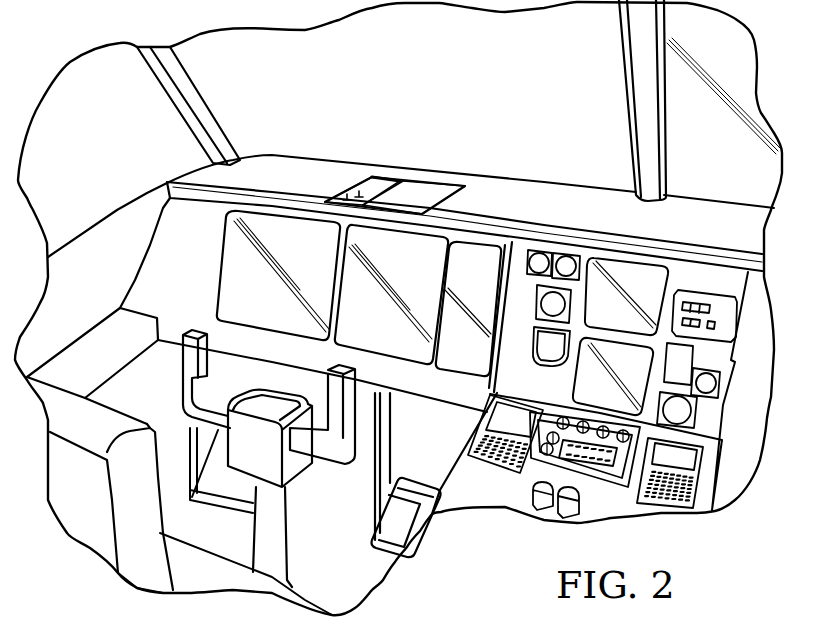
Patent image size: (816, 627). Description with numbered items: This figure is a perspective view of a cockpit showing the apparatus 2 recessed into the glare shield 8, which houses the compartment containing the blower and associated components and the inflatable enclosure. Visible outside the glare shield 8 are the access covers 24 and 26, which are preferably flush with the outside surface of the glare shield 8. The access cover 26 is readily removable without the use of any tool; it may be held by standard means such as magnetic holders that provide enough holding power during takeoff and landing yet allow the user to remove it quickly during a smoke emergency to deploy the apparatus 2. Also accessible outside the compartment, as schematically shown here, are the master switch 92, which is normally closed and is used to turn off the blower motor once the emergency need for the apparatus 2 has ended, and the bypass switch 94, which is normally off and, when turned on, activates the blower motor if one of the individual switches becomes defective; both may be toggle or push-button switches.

The apparatus 2 is at (410, 170).
The glare shield 8 is at (535, 193).
The access cover 24 is at (382, 187).
The access cover 26 is at (440, 192).
The master switch 92 is at (344, 198).
The bypass switch 94 is at (359, 192).